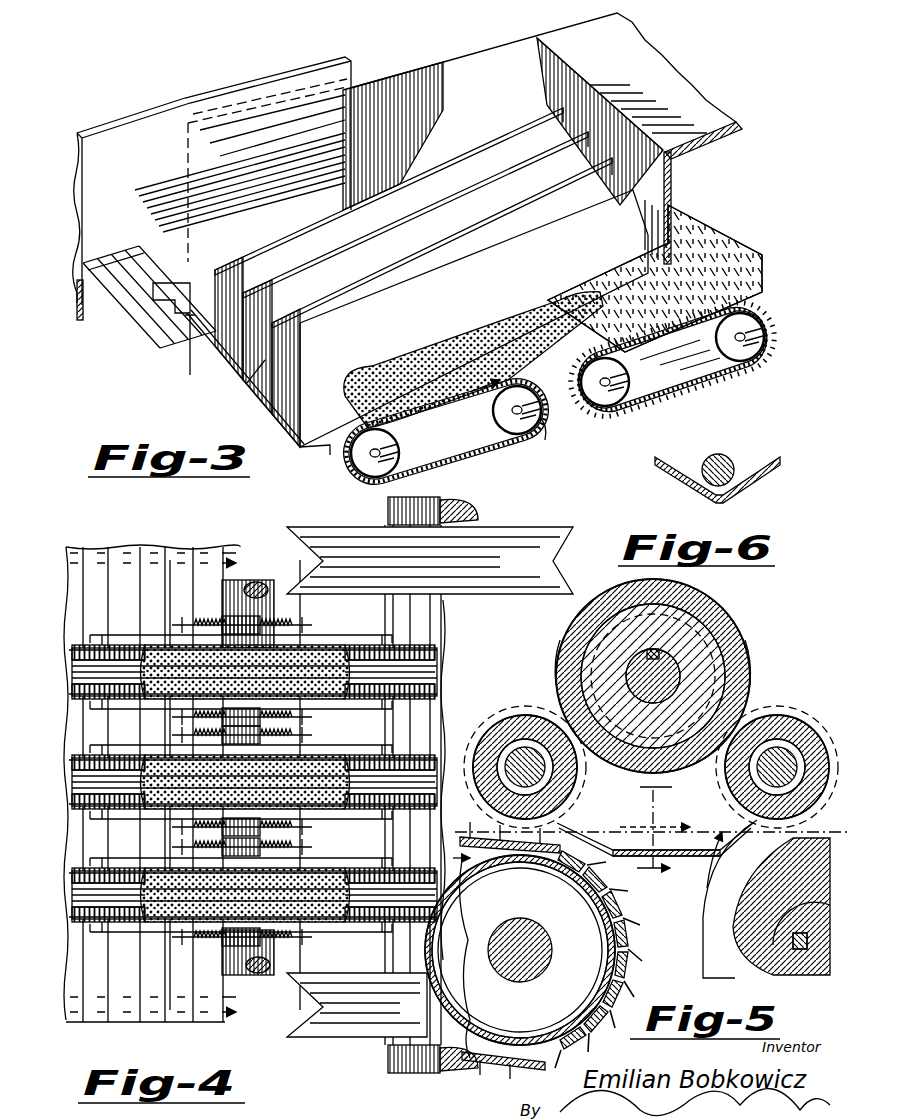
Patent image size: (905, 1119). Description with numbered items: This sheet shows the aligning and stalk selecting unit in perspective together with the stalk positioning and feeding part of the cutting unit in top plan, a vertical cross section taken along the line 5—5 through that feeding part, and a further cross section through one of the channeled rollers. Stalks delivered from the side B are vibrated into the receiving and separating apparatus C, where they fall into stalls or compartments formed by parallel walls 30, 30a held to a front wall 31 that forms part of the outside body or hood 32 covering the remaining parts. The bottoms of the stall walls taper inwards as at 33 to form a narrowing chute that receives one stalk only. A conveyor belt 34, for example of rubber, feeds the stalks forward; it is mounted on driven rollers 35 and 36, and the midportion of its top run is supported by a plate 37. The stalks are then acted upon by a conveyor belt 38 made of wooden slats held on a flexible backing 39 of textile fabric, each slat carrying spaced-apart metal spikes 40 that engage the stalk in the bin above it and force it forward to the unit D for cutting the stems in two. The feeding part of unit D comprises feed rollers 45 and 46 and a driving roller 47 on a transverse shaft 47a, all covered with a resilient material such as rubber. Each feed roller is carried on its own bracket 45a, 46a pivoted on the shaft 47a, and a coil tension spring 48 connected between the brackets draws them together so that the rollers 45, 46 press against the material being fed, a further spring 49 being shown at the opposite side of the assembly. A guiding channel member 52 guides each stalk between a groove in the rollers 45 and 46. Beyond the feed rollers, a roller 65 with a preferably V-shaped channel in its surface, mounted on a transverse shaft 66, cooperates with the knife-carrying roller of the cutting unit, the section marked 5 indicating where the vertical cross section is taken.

In FIG. 3, the side wall B is at (120, 182).
In FIG. 3, the receiving and separating apparatus C is at (478, 70).
In FIG. 4, the unit for cutting the stems D is at (268, 533).
In FIG. 5, the unit for cutting the stems D is at (800, 612).
In FIG. 3, the parallel wall 30 is at (283, 430).
In FIG. 3, the parallel wall 30a is at (189, 373).
In FIG. 3, the front wall 31 is at (673, 181).
In FIG. 3, the outside body or hood 32 is at (704, 112).
In FIG. 3, the tapered wall bottom 33 is at (245, 384).
In FIG. 3, the conveyor belt 34 is at (470, 462).
In FIG. 3, the roller 35 is at (365, 474).
In FIG. 3, the roller 36 is at (548, 435).
In FIG. 3, the plate 37 is at (492, 420).
In FIG. 3, the conveyor belt 38 is at (640, 410).
In FIG. 4, the conveyor belt 38 is at (103, 1022).
In FIG. 5, the conveyor belt 38 is at (628, 978).
In FIG. 3, the flexible backing 39 is at (705, 372).
In FIG. 3, the spikes 40 is at (745, 289).
In FIG. 4, the spikes 40 is at (124, 563).
In FIG. 5, the spikes 40 is at (632, 922).
In FIG. 4, the feed roller 45 is at (118, 650).
In FIG. 5, the feed roller 45 is at (518, 717).
In FIG. 4, the bracket 45a is at (140, 758).
In FIG. 5, the bracket 45a is at (540, 706).
In FIG. 4, the feed roller 46 is at (358, 652).
In FIG. 5, the feed roller 46 is at (773, 714).
In FIG. 4, the bracket 46a is at (352, 758).
In FIG. 5, the bracket 46a is at (762, 705).
In FIG. 4, the driving roller 47 is at (317, 900).
In FIG. 5, the driving roller 47 is at (742, 636).
In FIG. 4, the shaft 47a is at (258, 585).
In FIG. 5, the shaft 47a is at (662, 655).
In FIG. 4, the coil tension spring 48 is at (290, 623).
In FIG. 4, the spring 49 is at (300, 717).
In FIG. 5, the guiding channel member 52 is at (693, 853).
In FIG. 4, the roller 65 is at (330, 528).
In FIG. 5, the roller 65 is at (772, 980).
In FIG. 4, the transverse shaft 66 is at (478, 508).
In FIG. 5, the transverse shaft 66 is at (804, 950).
In FIG. 4, the section line 5— 5 is at (57, 752).